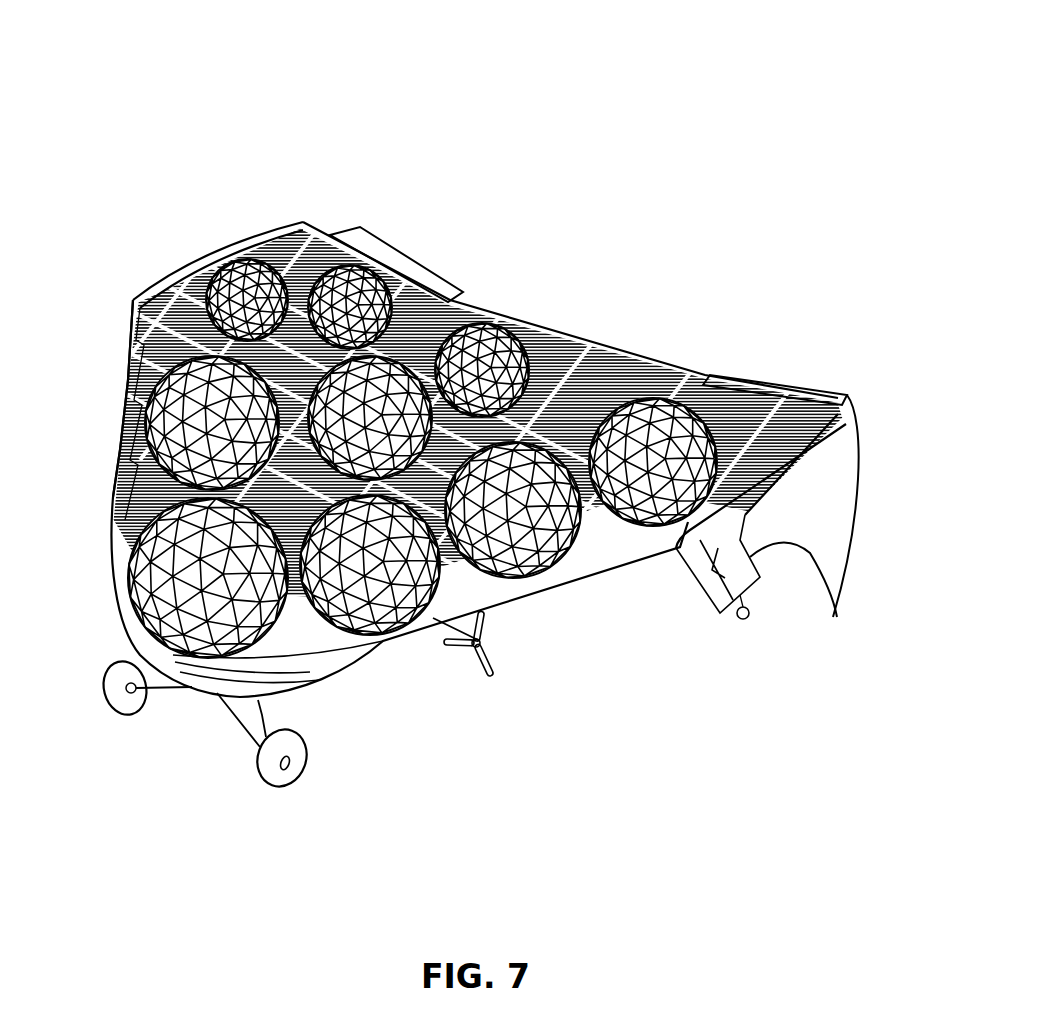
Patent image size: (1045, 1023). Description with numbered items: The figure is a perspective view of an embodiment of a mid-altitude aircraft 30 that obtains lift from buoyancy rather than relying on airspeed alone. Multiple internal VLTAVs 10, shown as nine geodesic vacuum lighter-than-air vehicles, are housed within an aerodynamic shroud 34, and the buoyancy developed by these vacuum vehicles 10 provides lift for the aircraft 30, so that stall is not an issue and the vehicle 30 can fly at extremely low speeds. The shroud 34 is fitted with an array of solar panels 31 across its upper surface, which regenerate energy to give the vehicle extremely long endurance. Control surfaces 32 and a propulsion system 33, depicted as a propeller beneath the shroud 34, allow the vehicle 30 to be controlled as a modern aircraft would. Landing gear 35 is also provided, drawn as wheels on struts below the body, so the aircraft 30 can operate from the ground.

The internal VLTAV 10 is at (213, 440).
The mid-altitude aircraft 30 is at (273, 155).
The solar panels 31 is at (188, 312).
The control surfaces 32 is at (804, 526).
The propulsion system 33 is at (485, 637).
The aerodynamic shroud 34 is at (128, 512).
The landing gear 35 is at (118, 678).